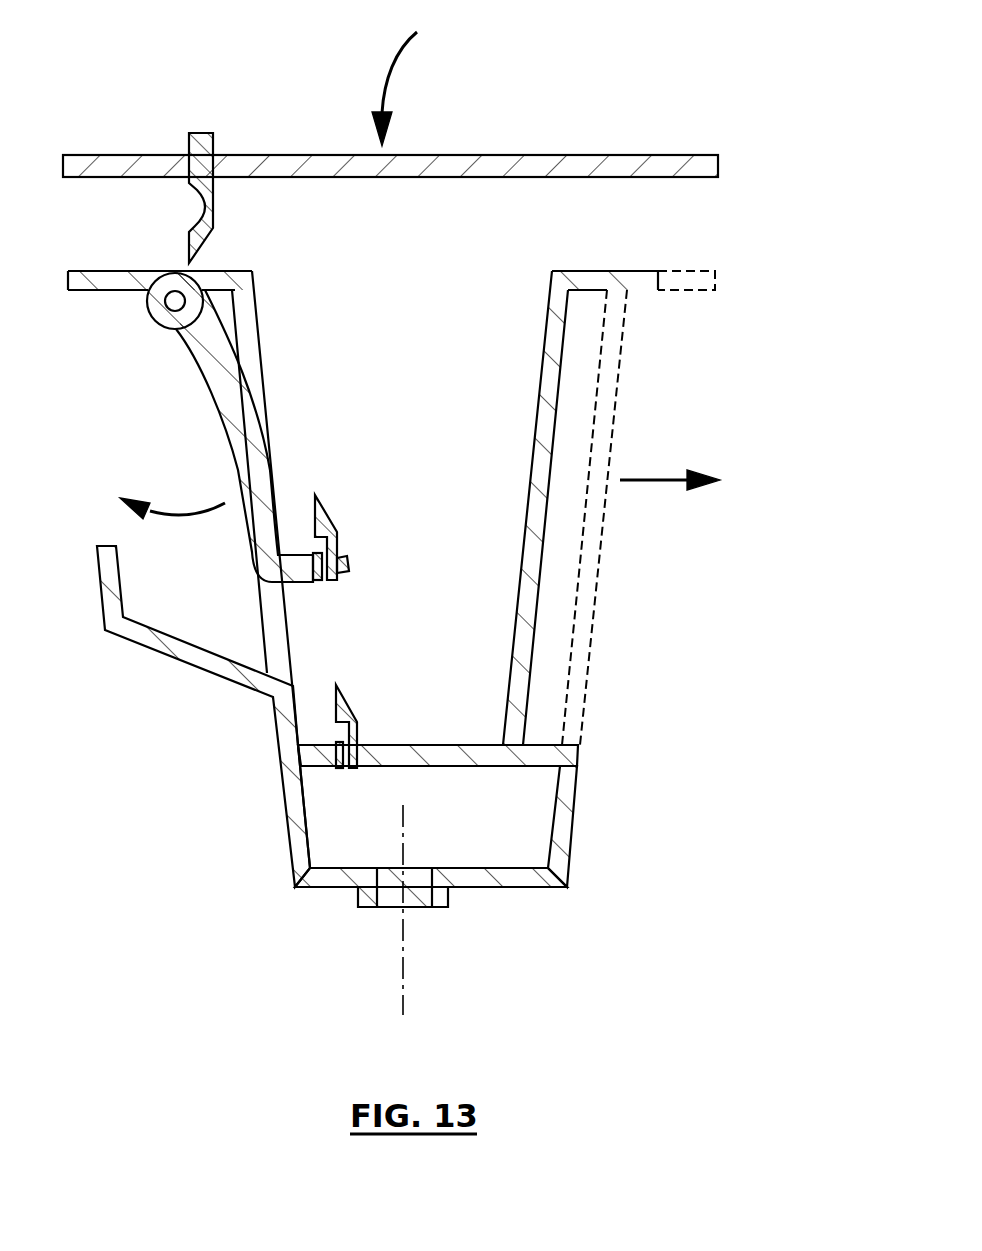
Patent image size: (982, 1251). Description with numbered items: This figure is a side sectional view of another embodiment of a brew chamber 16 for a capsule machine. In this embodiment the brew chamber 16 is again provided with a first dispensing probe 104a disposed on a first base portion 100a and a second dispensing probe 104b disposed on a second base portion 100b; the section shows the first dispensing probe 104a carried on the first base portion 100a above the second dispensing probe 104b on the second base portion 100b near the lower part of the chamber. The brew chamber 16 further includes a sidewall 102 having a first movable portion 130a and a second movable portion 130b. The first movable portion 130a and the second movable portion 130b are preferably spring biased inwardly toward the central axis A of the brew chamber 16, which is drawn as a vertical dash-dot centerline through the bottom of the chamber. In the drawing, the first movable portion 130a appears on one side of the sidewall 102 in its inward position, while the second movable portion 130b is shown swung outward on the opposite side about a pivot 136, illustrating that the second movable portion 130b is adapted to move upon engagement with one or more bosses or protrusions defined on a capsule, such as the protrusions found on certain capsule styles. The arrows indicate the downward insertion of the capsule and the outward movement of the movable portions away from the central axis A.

The brew chamber 16 is at (770, 217).
The sidewall 102 is at (683, 404).
The first movable portion 130a is at (542, 378).
The second movable portion 130b is at (270, 397).
The hinge pin 136 is at (175, 301).
The first base portion 100a is at (300, 553).
The first dispensing probe 104a is at (330, 512).
The second base portion 100b is at (318, 743).
The second dispensing probe 104b is at (350, 715).
The central axis A is at (403, 978).